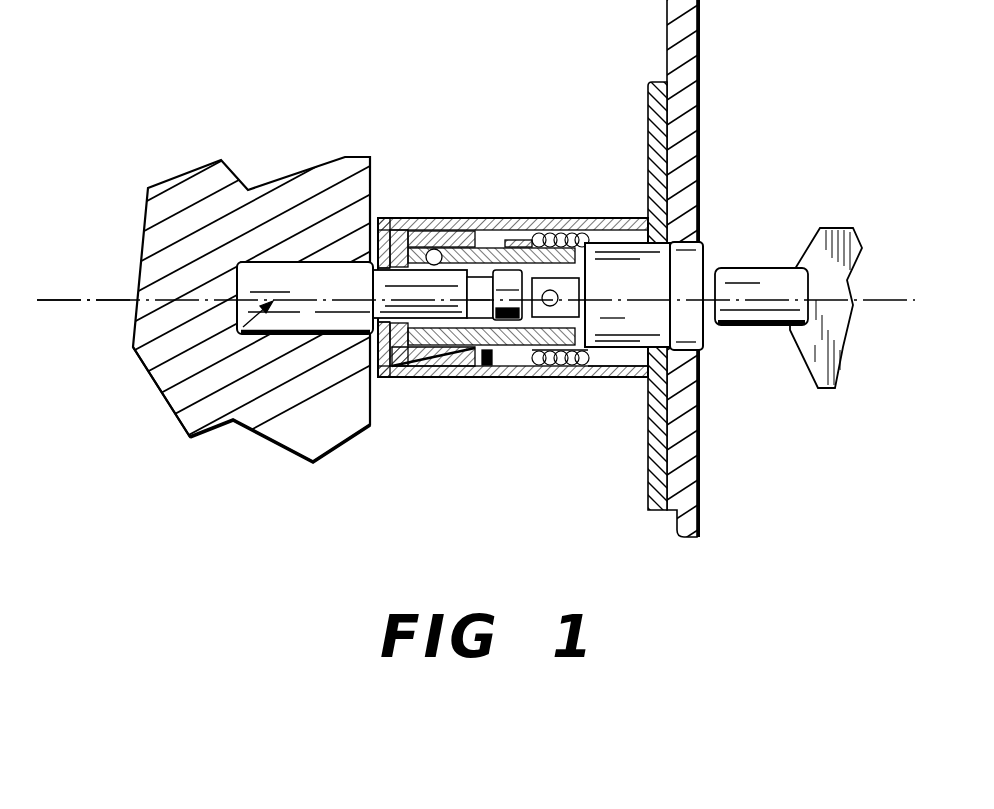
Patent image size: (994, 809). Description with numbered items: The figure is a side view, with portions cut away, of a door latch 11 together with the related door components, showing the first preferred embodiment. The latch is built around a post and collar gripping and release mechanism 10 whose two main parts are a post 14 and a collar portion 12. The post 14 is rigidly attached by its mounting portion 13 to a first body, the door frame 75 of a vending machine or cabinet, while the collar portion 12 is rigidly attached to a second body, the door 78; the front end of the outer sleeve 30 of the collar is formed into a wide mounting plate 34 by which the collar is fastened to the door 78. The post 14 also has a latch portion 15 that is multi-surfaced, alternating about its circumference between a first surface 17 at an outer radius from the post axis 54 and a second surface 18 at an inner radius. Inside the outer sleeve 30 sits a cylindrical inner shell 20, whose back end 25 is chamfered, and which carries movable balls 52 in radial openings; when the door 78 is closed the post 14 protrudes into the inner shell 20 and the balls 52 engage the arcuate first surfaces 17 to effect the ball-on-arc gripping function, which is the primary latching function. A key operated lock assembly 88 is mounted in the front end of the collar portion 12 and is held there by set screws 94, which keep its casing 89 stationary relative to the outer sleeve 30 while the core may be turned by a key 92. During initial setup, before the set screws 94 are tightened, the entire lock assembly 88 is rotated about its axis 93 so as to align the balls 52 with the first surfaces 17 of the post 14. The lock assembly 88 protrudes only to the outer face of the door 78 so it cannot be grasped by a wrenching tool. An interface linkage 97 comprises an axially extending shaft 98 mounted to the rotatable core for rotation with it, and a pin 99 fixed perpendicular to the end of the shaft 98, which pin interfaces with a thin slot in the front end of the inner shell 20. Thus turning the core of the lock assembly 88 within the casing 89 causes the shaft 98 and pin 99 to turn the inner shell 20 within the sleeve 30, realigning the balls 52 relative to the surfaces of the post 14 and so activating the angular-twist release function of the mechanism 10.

The bar and collar gripping and release mechanism 10 is at (497, 455).
The door latch 11 is at (762, 105).
The collar portion 12 is at (555, 212).
The mounting portion 13 is at (157, 385).
The post 14 is at (299, 248).
The latch portion 15 is at (390, 378).
The first surface 17 is at (395, 218).
The second surface 18 is at (372, 292).
The cylindrical inner shell 20 is at (478, 378).
The back end 25 is at (440, 330).
The outer sleeve 30 is at (584, 386).
The mounting plate 34 is at (650, 148).
The movable balls 52 is at (428, 249).
The post axis 54 is at (81, 283).
The door frame 75 is at (165, 207).
The door 78 is at (690, 442).
The lock assembly 88 is at (667, 265).
The casing 89 is at (686, 270).
The key 92 is at (792, 268).
The lock assembly axis 93 is at (850, 303).
The set screws 94 is at (612, 218).
The interface linkage 97 is at (549, 278).
The shaft 98 is at (587, 284).
The pin 99 is at (537, 378).